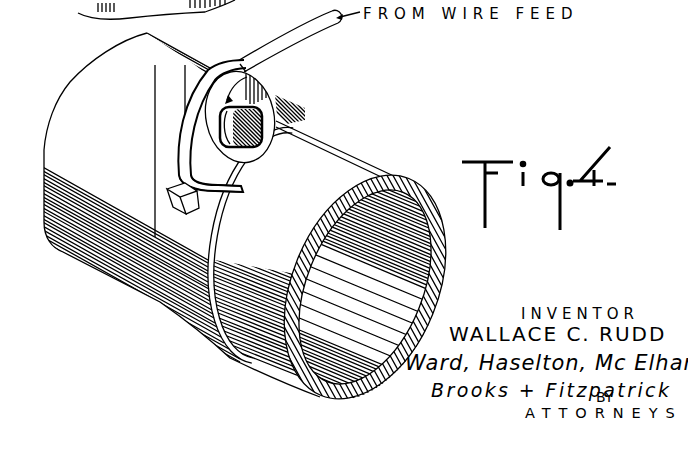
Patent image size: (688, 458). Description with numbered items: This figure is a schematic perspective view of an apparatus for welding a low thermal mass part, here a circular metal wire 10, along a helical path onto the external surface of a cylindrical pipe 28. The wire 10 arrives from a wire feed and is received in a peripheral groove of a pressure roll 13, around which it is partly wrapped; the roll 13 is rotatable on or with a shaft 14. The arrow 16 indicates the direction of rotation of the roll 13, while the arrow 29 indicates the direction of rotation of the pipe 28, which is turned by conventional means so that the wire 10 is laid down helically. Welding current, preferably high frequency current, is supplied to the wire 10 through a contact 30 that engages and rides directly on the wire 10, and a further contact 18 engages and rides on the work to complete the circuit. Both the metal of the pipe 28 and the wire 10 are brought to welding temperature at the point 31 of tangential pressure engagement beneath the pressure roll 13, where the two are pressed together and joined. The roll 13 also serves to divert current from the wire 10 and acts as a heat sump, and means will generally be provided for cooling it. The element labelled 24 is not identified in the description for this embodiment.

The wire feed tube 10 is at (299, 42).
The guide block 13 is at (272, 92).
The guide aperture 14 is at (264, 118).
The guide tube tip 16 is at (244, 66).
The clamp block 18 is at (178, 212).
The wire supply 24 is at (93, 12).
The tube 28 is at (345, 173).
The band 29 is at (258, 254).
The collar ring 30 is at (186, 147).
The support 31 is at (238, 184).